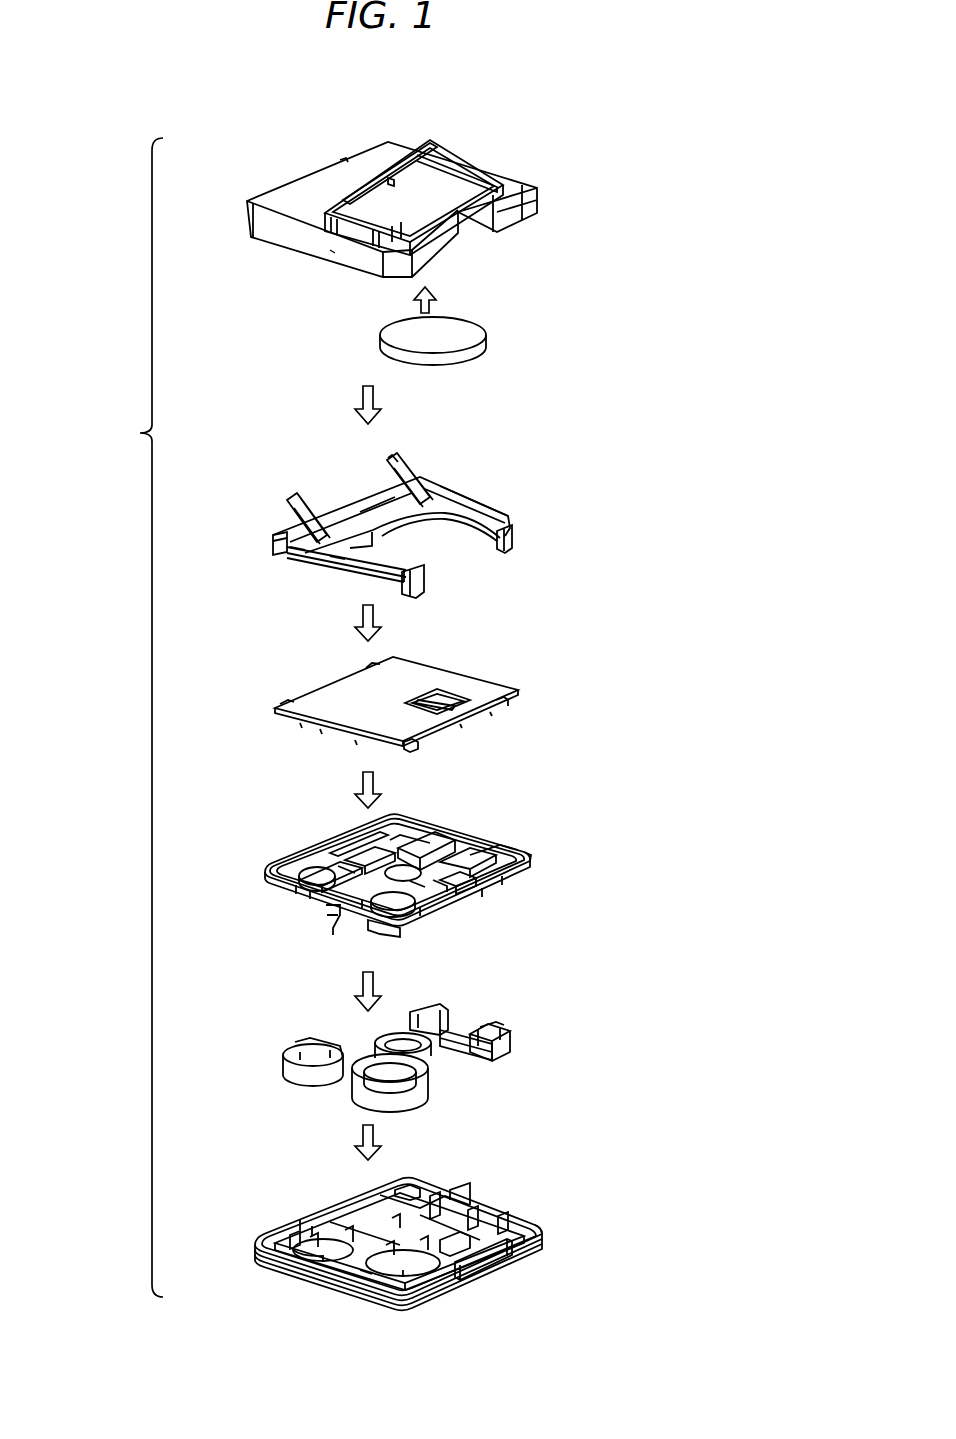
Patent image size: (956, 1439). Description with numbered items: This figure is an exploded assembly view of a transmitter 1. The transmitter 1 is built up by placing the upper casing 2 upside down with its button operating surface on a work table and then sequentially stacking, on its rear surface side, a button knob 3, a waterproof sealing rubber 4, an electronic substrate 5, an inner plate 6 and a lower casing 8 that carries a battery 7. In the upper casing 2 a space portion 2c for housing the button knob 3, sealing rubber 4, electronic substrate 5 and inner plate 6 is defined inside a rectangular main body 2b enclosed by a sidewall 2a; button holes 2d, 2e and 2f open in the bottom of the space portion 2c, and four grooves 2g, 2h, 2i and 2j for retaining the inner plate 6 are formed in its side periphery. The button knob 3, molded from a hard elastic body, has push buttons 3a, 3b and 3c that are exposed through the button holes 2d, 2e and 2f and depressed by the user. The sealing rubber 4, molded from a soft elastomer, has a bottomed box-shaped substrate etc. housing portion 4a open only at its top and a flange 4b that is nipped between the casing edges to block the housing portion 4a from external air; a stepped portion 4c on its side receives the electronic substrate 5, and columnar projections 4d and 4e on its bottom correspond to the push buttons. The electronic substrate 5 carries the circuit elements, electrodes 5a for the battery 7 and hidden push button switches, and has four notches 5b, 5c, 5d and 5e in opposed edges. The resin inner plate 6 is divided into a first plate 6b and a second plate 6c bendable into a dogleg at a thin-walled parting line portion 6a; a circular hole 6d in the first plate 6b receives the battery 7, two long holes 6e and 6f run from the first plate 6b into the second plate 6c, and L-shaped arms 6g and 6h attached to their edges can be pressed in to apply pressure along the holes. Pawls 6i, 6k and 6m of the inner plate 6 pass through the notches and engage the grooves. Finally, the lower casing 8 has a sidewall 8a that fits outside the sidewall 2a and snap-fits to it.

The transmitter 1 is at (140, 435).
The upper casing 2 is at (388, 1250).
The sidewall 2a is at (520, 1204).
The rectangular main body 2b is at (492, 1262).
The space portion 2c is at (446, 1192).
The button hole 2d is at (330, 1255).
The button hole 2e is at (370, 1290).
The button hole 2f is at (404, 1278).
The groove 2g is at (320, 1216).
The groove 2h is at (378, 1190).
The groove 2i is at (548, 1240).
The groove 2j is at (456, 1256).
The button knob 3 is at (346, 1070).
The push button 3a is at (284, 1060).
The push button 3b is at (404, 1106).
The push button 3c is at (446, 1068).
The sealing rubber 4 is at (387, 887).
The substrate etc. housing portion 4a is at (494, 860).
The flange 4b is at (532, 850).
The stepped portion 4c is at (426, 840).
The columnar projection 4d is at (304, 908).
The columnar projection 4e is at (386, 934).
The electronic substrate 5 is at (364, 713).
The electrodes for the battery 5a is at (452, 696).
The notch 5b is at (282, 703).
The notch 5c is at (368, 666).
The notch 5d is at (412, 752).
The notch 5e is at (506, 704).
The inner plate 6 is at (367, 511).
The parting line portion 6a is at (378, 462).
The first plate 6b is at (472, 508).
The second plate 6c is at (348, 524).
The circular hole 6d is at (452, 518).
The long hole 6e is at (292, 556).
The long hole 6f is at (398, 462).
The L-shaped arm 6g is at (336, 568).
The L-shaped arm 6h is at (422, 482).
The pawl 6i is at (268, 543).
The pawl 6k is at (428, 594).
The pawl 6m is at (508, 552).
The battery 7 is at (497, 320).
The lower casing 8 is at (359, 232).
The sidewall 8a is at (331, 250).